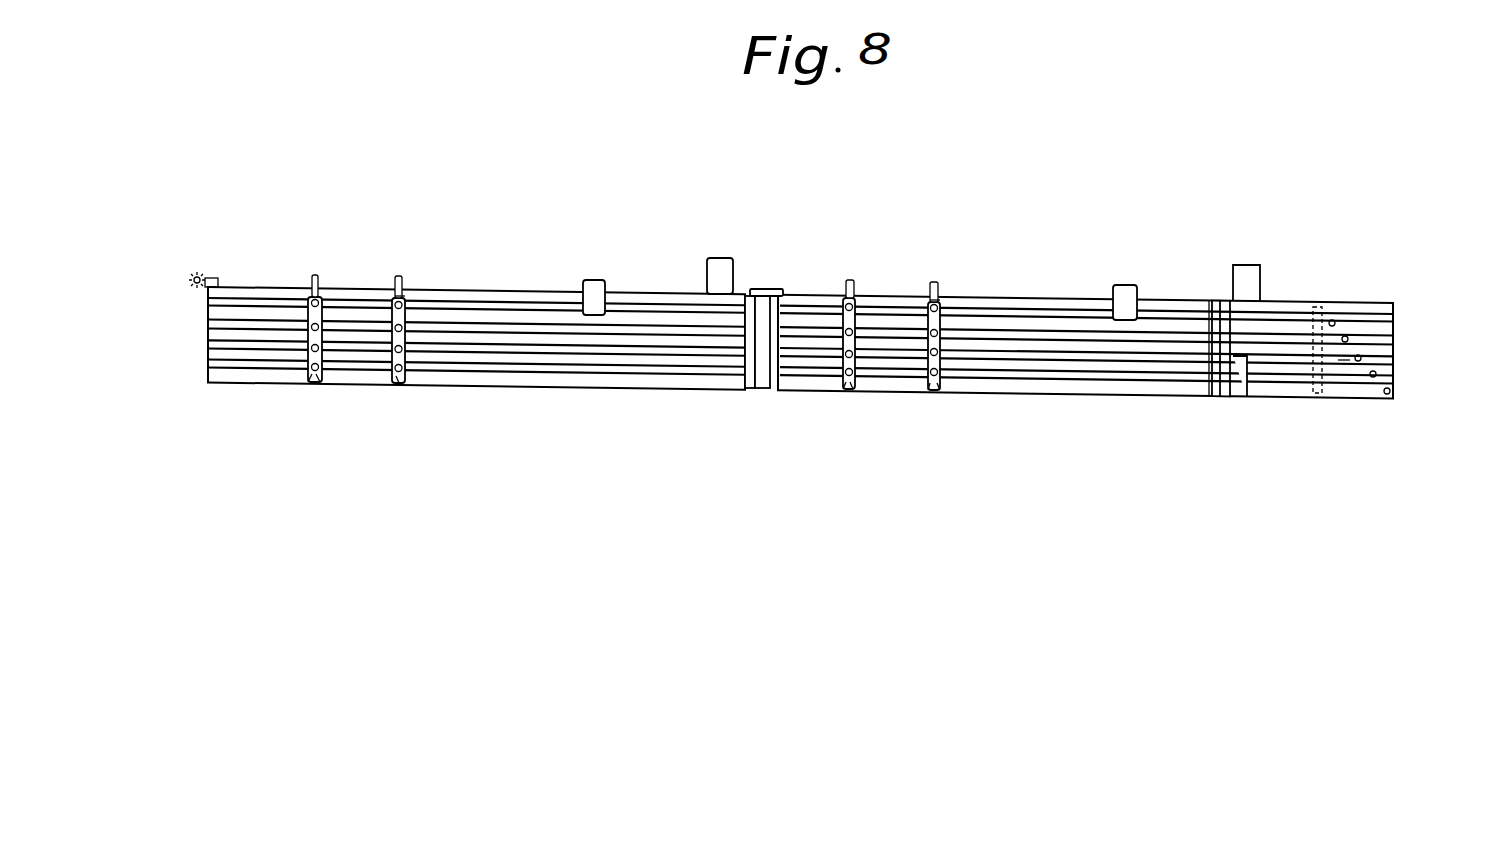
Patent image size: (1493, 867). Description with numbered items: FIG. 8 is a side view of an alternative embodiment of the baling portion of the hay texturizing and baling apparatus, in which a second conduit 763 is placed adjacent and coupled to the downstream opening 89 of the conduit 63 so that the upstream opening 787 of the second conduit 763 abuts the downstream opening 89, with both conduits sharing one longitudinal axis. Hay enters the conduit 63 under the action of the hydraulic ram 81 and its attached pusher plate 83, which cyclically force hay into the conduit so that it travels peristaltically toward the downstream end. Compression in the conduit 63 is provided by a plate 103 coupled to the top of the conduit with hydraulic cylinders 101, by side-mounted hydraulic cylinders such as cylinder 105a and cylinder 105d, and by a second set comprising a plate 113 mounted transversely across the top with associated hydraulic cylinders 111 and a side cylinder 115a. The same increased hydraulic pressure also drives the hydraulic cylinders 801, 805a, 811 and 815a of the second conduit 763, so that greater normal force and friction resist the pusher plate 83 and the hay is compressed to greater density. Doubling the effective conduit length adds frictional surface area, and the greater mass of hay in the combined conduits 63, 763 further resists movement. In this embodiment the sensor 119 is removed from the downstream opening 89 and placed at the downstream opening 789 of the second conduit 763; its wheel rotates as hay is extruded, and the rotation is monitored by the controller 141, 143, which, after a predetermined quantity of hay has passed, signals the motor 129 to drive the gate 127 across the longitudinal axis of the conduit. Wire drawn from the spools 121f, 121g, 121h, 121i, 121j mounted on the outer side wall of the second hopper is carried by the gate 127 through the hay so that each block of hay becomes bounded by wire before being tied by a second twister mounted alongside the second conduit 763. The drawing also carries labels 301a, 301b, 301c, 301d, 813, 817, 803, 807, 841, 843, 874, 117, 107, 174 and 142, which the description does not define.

The conduit 63 is at (1088, 400).
The second conduit 763 is at (577, 420).
The conductor 301a is at (238, 364).
The conductor 301b is at (222, 357).
The conductor 301c is at (212, 340).
The conductor 301d is at (212, 314).
The downstream opening of the second conduit 789 is at (208, 384).
The sensor 119 is at (206, 272).
The clamp 813 is at (306, 297).
The hydraulic cylinders 811 is at (314, 276).
The clamp end 817 is at (320, 382).
The hydraulic cylinder 815a is at (310, 382).
The hydraulic cylinder 805a is at (392, 300).
The hydraulic cylinders 801 is at (403, 280).
The tab base 803 is at (405, 295).
The clamp end 807 is at (396, 384).
The tab 841 is at (590, 282).
The tab 843 is at (718, 258).
The upstream opening of the second conduit 787 is at (760, 390).
The downstream opening 89 is at (769, 390).
The connector plate 874 is at (756, 289).
The plate 113 is at (846, 298).
The hydraulic cylinders 111 is at (850, 281).
The clamp end 117 is at (852, 390).
The hydraulic cylinder 115a is at (840, 389).
The hydraulic cylinder 105a is at (930, 306).
The hydraulic cylinders 101 is at (938, 283).
The plate 103 is at (941, 298).
The clamp end 107 is at (932, 387).
The hydraulic cylinder 105d is at (940, 385).
The controller 141 is at (1118, 286).
The cable end 174 is at (1208, 316).
The bar 142 is at (1215, 301).
The controller 143 is at (1240, 266).
The gate 127 is at (1222, 397).
The motor 129 is at (1244, 398).
The pusher plate 83 is at (1315, 307).
The spool of wire 121j is at (1335, 320).
The spool of wire 121i is at (1348, 338).
The spool of wire 121h is at (1362, 358).
The spool of wire 121g is at (1377, 374).
The spool of wire 121f is at (1390, 392).
The hydraulic ram 81 is at (1343, 362).